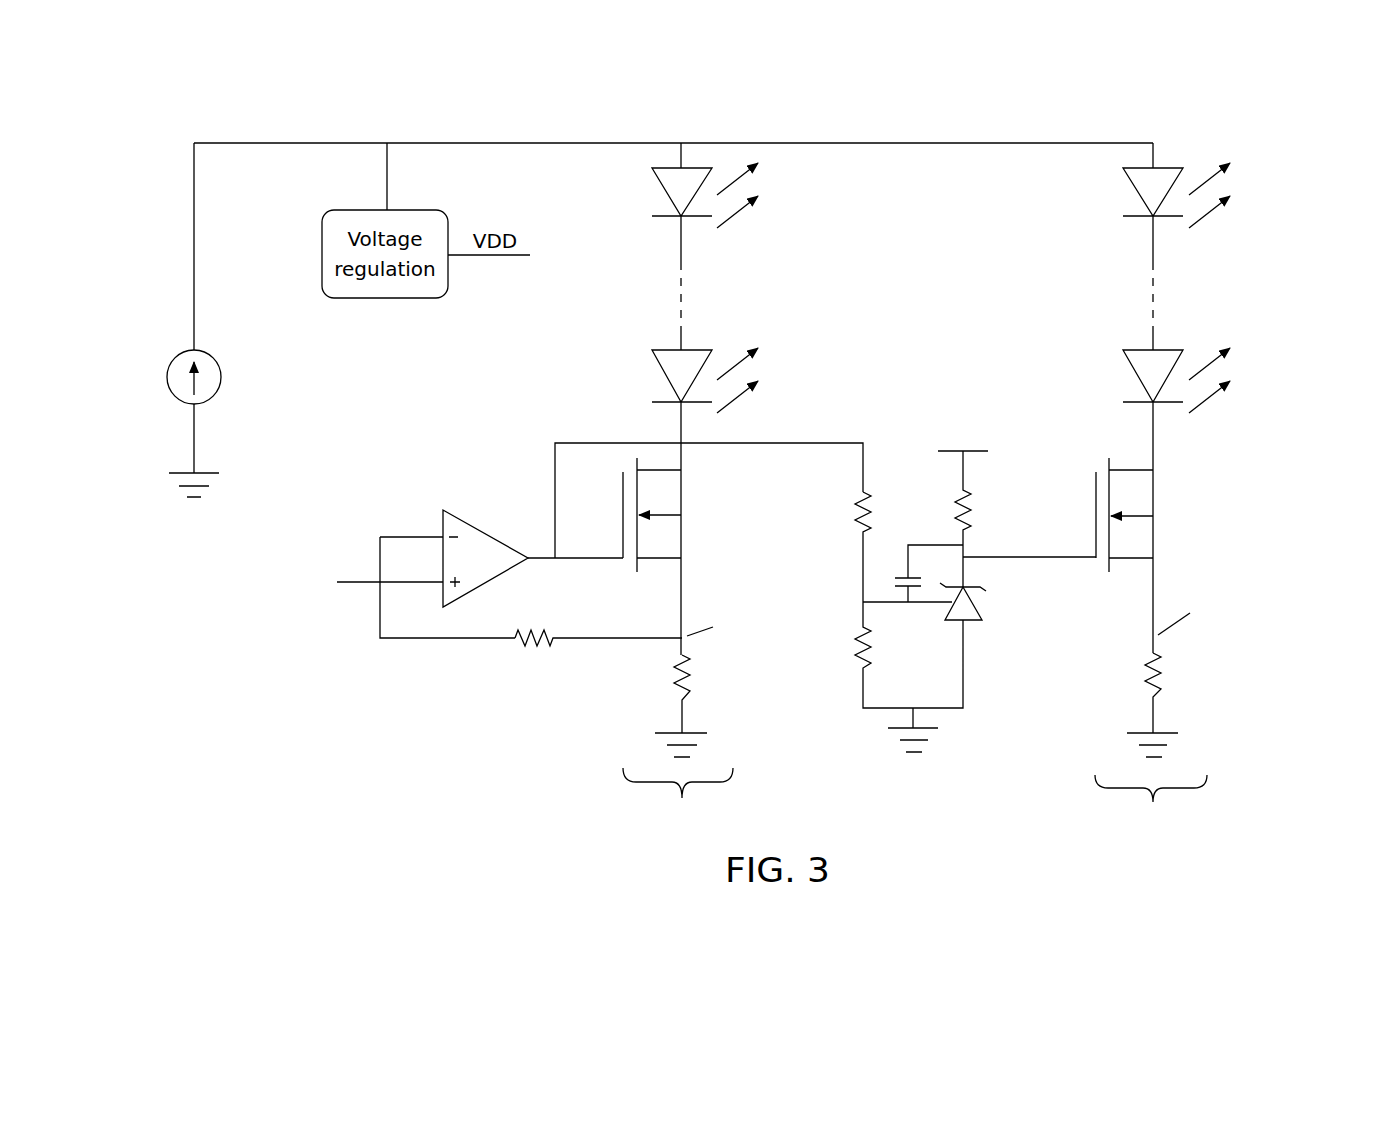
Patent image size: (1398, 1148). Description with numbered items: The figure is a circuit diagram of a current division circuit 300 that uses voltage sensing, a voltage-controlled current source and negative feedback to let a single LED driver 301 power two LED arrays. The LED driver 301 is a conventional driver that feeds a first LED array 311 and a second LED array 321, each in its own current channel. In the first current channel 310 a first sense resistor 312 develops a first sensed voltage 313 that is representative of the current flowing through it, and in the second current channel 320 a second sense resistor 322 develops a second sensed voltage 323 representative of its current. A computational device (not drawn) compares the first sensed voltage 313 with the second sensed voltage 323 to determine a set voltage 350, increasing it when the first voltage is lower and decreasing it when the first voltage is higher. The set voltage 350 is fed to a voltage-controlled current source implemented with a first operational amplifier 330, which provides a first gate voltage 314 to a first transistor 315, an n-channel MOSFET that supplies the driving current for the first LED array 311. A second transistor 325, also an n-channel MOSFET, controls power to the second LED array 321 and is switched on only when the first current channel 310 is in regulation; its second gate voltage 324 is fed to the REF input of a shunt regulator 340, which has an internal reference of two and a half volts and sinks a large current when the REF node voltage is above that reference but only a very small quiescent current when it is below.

The current division circuit 300 is at (140, 184).
The LED driver 301 is at (107, 425).
The first current channel 310 is at (678, 800).
The first LED array 311 is at (660, 278).
The first sense resistor 312 is at (727, 705).
The first sensed voltage 313 is at (768, 627).
The first gate voltage 314 is at (575, 522).
The first transistor 315 is at (710, 508).
The second current channel 320 is at (1151, 807).
The second LED array 321 is at (1135, 278).
The second sense resistor 322 is at (1200, 707).
The second sensed voltage 323 is at (1303, 592).
The second gate voltage 324 is at (1052, 515).
The second transistor 325 is at (1183, 510).
The first operational amplifier 330 is at (437, 515).
The shunt regulator 340 is at (990, 632).
The set voltage 350 is at (278, 600).